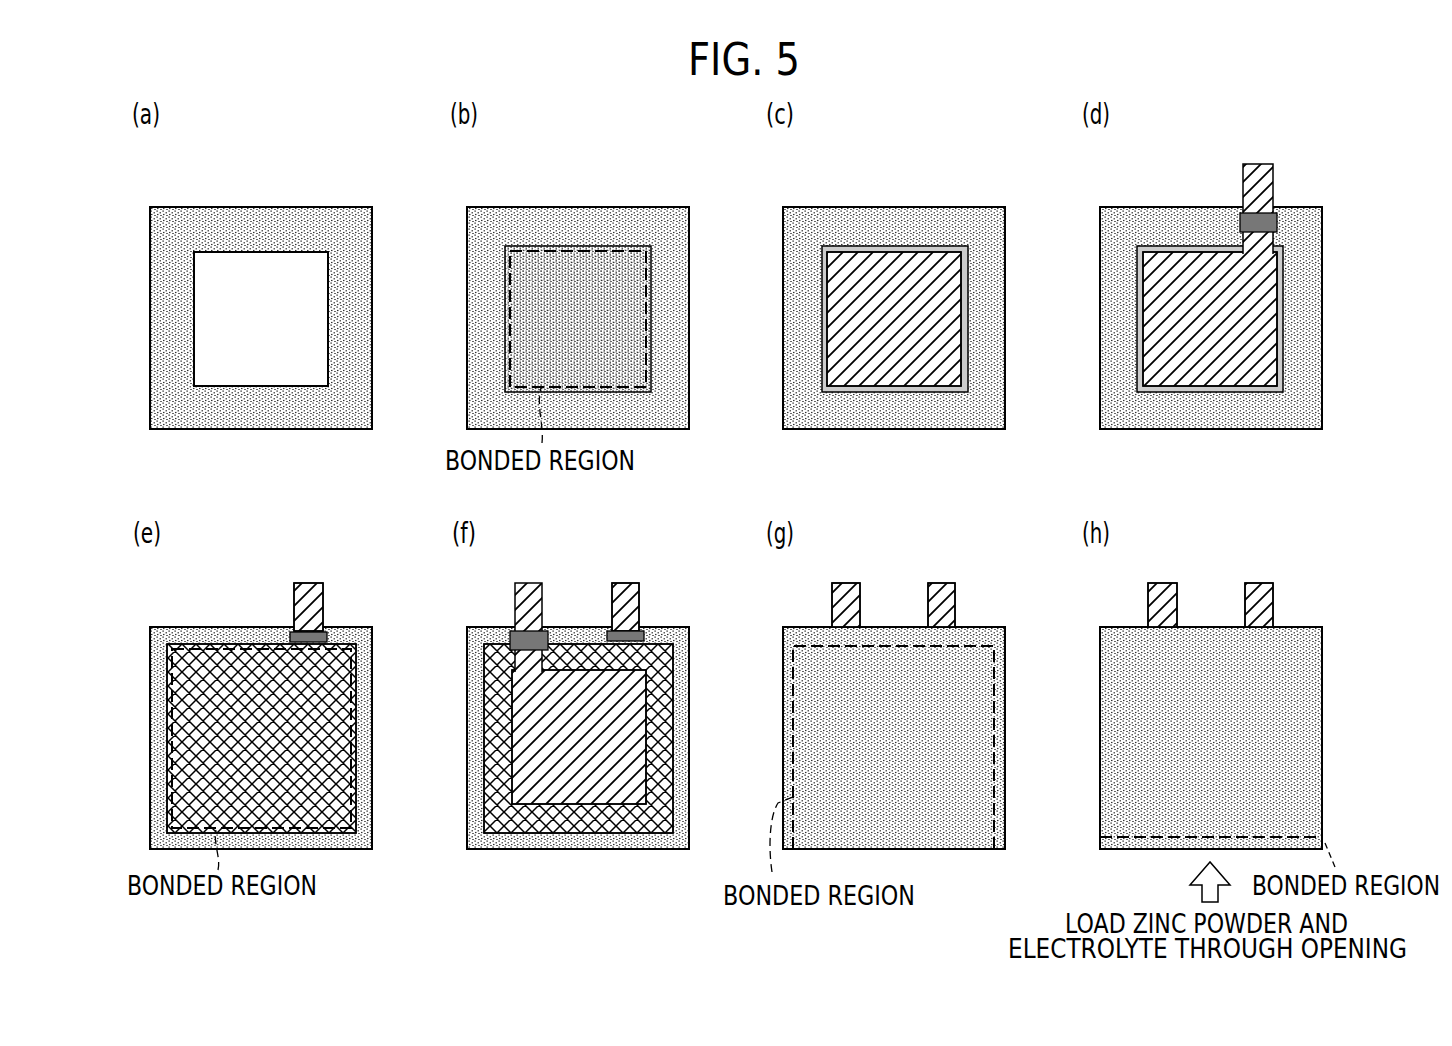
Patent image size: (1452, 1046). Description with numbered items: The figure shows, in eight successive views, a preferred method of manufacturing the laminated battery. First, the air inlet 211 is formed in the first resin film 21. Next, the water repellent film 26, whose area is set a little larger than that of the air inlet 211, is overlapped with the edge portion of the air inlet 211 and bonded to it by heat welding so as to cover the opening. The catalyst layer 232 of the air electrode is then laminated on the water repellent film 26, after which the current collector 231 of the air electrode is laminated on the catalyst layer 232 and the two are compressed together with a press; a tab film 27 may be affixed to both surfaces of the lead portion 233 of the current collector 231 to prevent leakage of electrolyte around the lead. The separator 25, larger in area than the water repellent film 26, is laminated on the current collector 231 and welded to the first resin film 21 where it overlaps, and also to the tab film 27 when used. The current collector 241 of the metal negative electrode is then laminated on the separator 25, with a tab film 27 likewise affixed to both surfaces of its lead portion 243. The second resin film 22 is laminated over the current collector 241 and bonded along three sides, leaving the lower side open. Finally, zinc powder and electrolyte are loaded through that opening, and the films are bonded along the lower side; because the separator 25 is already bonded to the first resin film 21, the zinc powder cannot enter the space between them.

The first resin film 21 is at (210, 222).
The air inlet 211 is at (328, 290).
The water repellent film 26 is at (599, 270).
The catalyst layer 232 is at (922, 275).
The current collector 231 is at (1183, 272).
The lead portion 233 is at (1265, 181).
The tab film 27 is at (1278, 223).
The separator 25 is at (207, 672).
The current collector 241 is at (578, 695).
The lead portion 243 is at (528, 584).
The second resin film 22 is at (985, 637).